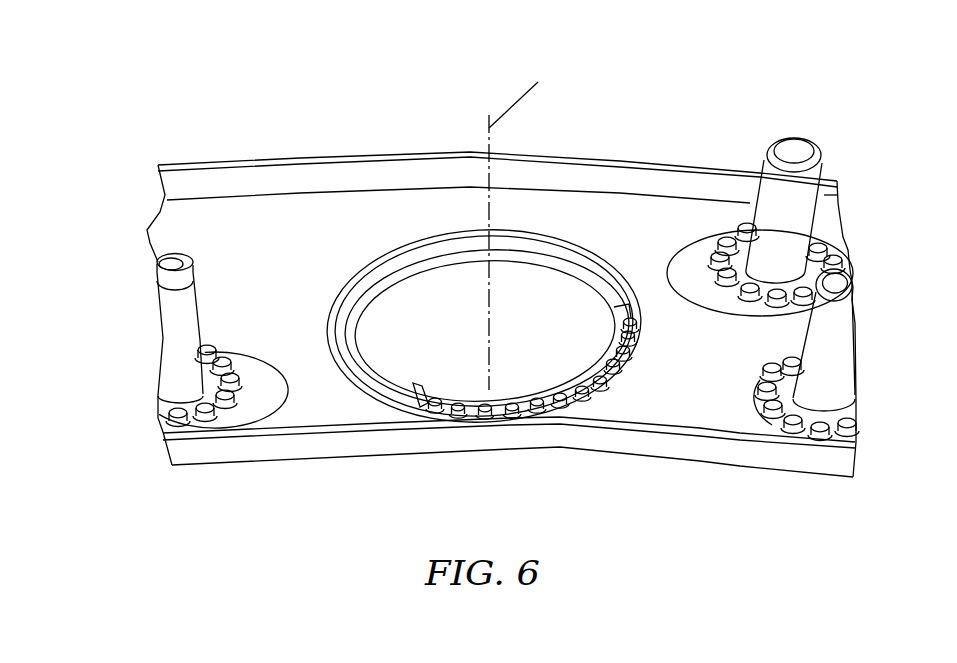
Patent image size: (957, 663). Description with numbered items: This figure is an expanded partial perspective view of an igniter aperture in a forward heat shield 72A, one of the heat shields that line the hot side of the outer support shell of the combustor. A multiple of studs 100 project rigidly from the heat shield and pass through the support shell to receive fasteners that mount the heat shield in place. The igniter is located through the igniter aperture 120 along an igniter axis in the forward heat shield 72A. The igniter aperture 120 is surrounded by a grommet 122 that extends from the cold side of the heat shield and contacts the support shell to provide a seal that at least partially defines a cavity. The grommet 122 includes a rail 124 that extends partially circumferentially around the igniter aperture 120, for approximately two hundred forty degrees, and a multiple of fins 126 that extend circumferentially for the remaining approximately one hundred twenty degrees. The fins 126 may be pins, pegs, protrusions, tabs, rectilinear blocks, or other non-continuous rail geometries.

The forward heat shield 72A is at (698, 117).
The stud 100 is at (800, 150).
The igniter aperture 120 is at (517, 298).
The grommet 122 is at (429, 246).
The rail 124 is at (402, 390).
The fins 126 is at (522, 422).